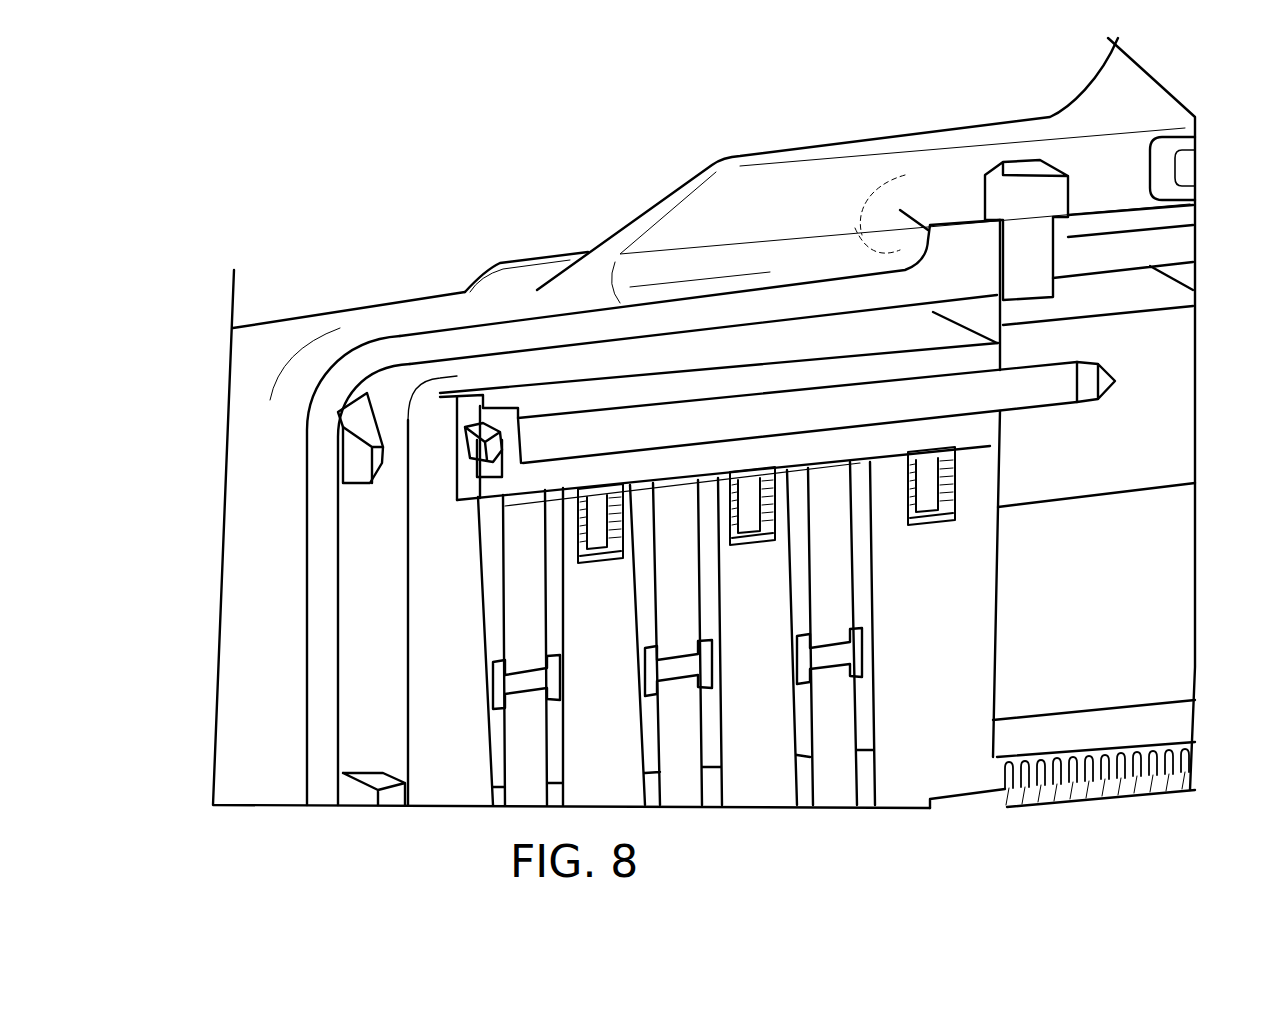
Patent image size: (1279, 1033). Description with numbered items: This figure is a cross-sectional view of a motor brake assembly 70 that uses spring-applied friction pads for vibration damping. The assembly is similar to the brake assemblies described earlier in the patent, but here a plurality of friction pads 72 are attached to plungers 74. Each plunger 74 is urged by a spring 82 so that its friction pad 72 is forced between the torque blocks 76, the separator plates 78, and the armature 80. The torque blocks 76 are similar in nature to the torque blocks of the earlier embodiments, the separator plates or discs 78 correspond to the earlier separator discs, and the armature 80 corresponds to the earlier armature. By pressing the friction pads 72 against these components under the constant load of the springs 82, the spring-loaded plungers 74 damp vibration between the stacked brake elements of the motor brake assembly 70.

The motor brake assembly 70 is at (777, 104).
The friction pad 72 is at (937, 450).
The plunger 74 is at (603, 513).
The torque block 76 is at (565, 368).
The separator plate 78 is at (733, 573).
The armature 80 is at (886, 497).
The spring 82 is at (580, 542).